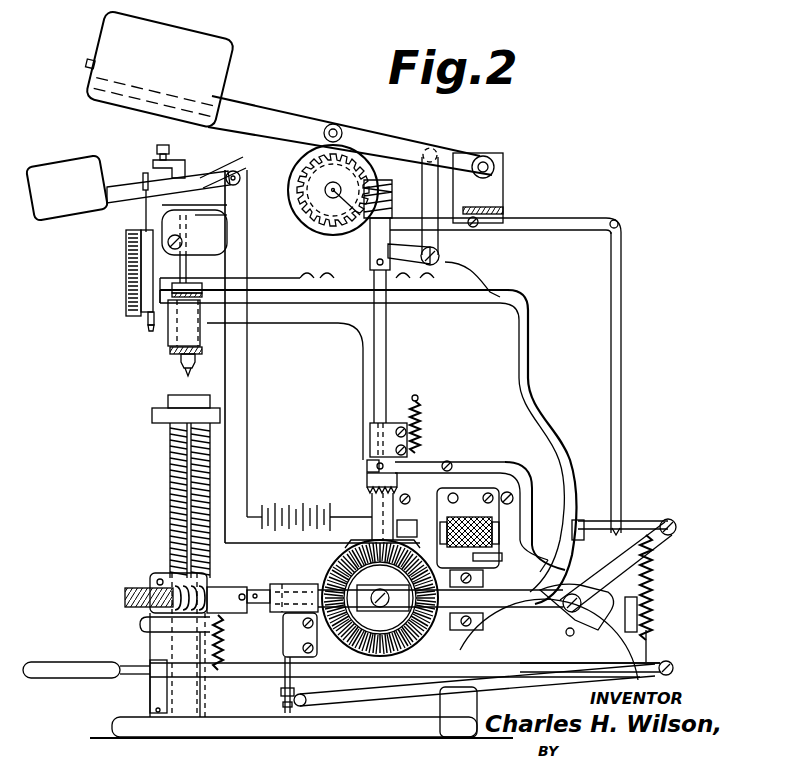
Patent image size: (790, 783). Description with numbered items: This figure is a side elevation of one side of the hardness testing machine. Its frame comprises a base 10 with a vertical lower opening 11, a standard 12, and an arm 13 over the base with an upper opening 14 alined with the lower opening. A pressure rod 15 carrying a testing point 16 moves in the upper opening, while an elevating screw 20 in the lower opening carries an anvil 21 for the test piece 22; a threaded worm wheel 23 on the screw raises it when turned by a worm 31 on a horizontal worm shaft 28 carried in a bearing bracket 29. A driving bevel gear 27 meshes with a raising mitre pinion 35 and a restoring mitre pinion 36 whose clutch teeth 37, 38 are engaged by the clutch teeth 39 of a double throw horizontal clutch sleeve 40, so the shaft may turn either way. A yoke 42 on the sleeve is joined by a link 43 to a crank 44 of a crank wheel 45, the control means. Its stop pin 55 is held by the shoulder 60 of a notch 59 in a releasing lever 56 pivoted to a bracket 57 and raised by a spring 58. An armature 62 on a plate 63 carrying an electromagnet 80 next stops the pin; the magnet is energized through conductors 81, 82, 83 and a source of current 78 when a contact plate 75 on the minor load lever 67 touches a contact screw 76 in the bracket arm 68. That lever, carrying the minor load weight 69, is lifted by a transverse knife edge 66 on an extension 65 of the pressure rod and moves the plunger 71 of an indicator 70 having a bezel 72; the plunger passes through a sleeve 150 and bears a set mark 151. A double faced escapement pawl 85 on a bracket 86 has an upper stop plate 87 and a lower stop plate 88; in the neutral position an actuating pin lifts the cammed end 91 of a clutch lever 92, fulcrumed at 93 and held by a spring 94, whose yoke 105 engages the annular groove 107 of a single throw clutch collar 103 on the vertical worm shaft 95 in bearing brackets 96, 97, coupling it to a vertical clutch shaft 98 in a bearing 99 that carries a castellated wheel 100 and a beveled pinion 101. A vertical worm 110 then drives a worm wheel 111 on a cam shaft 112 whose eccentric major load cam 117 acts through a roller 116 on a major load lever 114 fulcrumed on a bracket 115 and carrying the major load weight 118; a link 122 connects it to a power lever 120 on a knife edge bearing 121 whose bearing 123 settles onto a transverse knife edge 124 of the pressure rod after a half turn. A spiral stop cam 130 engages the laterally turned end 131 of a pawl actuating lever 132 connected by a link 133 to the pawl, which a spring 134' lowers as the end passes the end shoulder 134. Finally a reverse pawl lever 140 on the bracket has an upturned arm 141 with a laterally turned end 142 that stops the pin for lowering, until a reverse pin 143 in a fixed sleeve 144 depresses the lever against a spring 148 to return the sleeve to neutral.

The base 10 is at (397, 717).
The vertical lower opening 11 is at (148, 640).
The standard 12 is at (531, 398).
The arm 13 is at (282, 330).
The upper opening 14 is at (170, 340).
The pressure rod 15 is at (183, 363).
The testing point 16 is at (187, 376).
The elevating screw 20 is at (170, 465).
The anvil 21 is at (152, 415).
The test piece 22 is at (190, 396).
The threaded worm wheel 23 is at (128, 594).
The driving bevel gear 27 is at (416, 640).
The horizontal worm shaft 28 is at (260, 588).
The bearing bracket 29 is at (305, 583).
The worm 31 is at (242, 585).
The raising mitre pinion 35 is at (328, 571).
The restoring mitre pinion 36 is at (473, 556).
The clutch teeth 37 is at (370, 603).
The clutch teeth 38 is at (410, 607).
The clutch teeth 39 is at (484, 578).
The double throw horizontal clutch sleeve 40 is at (353, 617).
The yoke 42 is at (474, 686).
The link 43 is at (440, 596).
The crank 44 is at (576, 613).
The crank wheel 45 is at (486, 645).
The stop pin 55 is at (600, 675).
The releasing lever 56 is at (140, 677).
The bracket 57 is at (656, 641).
The spring 58 is at (224, 638).
The notch 59 is at (628, 624).
The shoulder 60 is at (575, 673).
The armature 62 is at (570, 471).
The plate 63 is at (507, 469).
The extension 65 is at (240, 196).
The transverse knife edge 66 is at (228, 168).
The minor load lever 67 is at (128, 183).
The bracket arm 68 is at (240, 176).
The minor load weight 69 is at (67, 188).
The indicator 70 is at (127, 275).
The plunger 71 is at (140, 222).
The bezel 72 is at (140, 315).
The contact plate 75 is at (186, 168).
The contact screw 76 is at (170, 136).
The source of current 78 is at (293, 512).
The electromagnet 80 is at (468, 517).
The conductor 81 is at (238, 493).
The conductor 82 is at (226, 506).
The conductor 83 is at (346, 520).
The double faced escapement pawl 85 is at (640, 520).
The bracket 86 is at (677, 529).
The upper stop plate 87 is at (580, 518).
The lower stop plate 88 is at (612, 510).
The cammed end 91 is at (536, 562).
The clutch lever 92 is at (462, 467).
The fulcrum 93 is at (465, 460).
The spring 94 is at (418, 418).
The vertical worm shaft 95 is at (387, 382).
The bearing bracket 96 is at (428, 265).
The bearing bracket 97 is at (398, 420).
The vertical clutch shaft 98 is at (398, 490).
The bearing 99 is at (410, 500).
The castellated wheel 100 is at (410, 473).
The beveled pinion 101 is at (365, 540).
The single throw clutch collar 103 is at (367, 467).
The yoke 105 is at (422, 432).
The annular groove 107 is at (372, 430).
The vertical worm 110 is at (440, 150).
The worm wheel 111 is at (432, 148).
The cam shaft 112 is at (385, 178).
The major load lever 114 is at (352, 135).
The bracket 115 is at (504, 172).
The roller 116 is at (336, 124).
The eccentric major load cam 117 is at (312, 150).
The major load weight 118 is at (178, 42).
The power lever 120 is at (229, 267).
The knife edge bearing 121 is at (128, 250).
The link 122 is at (504, 208).
The bearing 123 is at (196, 238).
The transverse knife edge 124 is at (200, 270).
The spiral stop cam 130 is at (290, 193).
The laterally turned end 131 is at (348, 256).
The pawl actuating lever 132 is at (577, 220).
The link 133 is at (622, 282).
The end shoulder 134 is at (350, 223).
The spring 134' is at (670, 587).
The reverse pawl lever 140 is at (481, 709).
The upturned arm 141 is at (656, 592).
The laterally turned end 142 is at (690, 572).
The reverse pin 143 is at (281, 691).
The fixed sleeve 144 is at (283, 640).
The spring 148 is at (283, 705).
The sleeve 150 is at (146, 322).
The set mark 151 is at (148, 331).